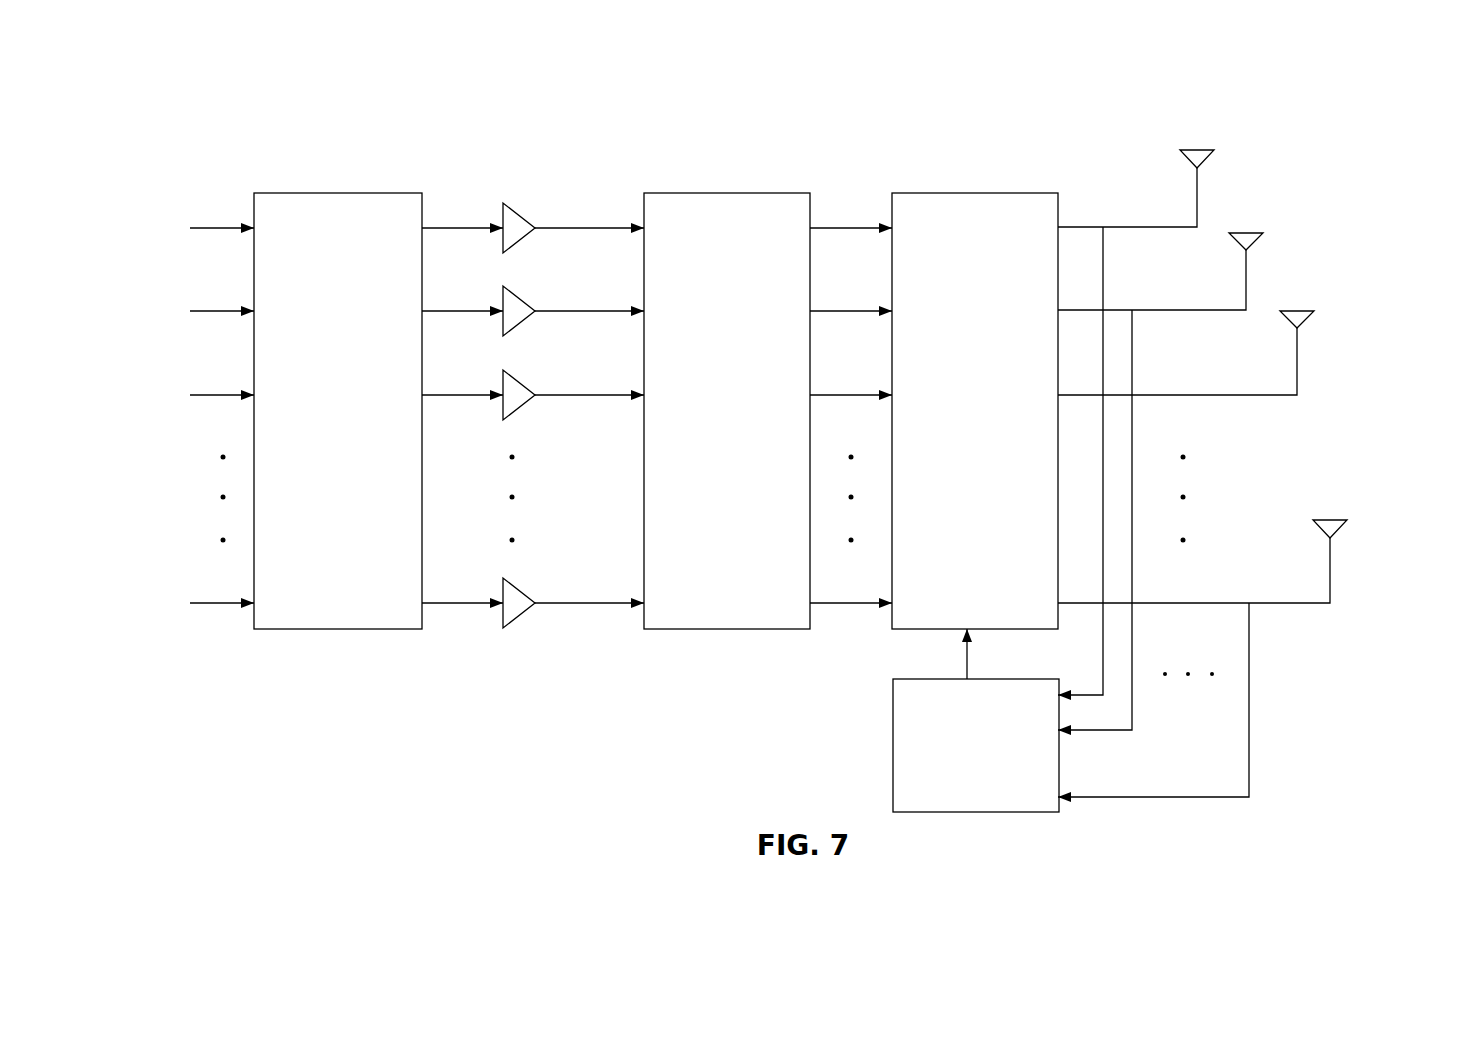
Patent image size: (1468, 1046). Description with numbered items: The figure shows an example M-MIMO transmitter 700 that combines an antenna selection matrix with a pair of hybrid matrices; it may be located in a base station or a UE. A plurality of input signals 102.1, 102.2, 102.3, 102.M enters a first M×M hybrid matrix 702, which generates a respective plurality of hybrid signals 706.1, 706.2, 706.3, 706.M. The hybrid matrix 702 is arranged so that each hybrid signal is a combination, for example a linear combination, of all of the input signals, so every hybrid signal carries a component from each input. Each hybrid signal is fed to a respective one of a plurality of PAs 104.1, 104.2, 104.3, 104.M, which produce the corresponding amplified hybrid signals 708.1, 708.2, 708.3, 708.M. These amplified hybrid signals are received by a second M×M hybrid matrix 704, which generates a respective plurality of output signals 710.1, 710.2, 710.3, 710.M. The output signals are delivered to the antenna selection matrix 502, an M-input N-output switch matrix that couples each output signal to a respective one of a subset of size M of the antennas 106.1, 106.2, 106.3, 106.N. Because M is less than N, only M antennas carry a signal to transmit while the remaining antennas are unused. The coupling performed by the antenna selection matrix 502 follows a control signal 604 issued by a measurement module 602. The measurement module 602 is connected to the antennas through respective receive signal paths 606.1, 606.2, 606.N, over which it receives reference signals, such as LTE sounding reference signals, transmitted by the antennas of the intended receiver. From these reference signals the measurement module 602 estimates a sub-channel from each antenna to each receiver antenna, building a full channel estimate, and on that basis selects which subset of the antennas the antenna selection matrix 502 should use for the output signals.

The M-MIMO transmitter 700 is at (1437, 61).
The input signal 102.1 is at (209, 220).
The input signal 102.2 is at (209, 303).
The input signal 102.3 is at (209, 387).
The input signal 102.M is at (220, 606).
The hybrid matrix 702 is at (338, 411).
The hybrid matrix 704 is at (727, 411).
The hybrid signal 706.1 is at (460, 220).
The hybrid signal 706.2 is at (460, 303).
The hybrid signal 706.3 is at (460, 387).
The hybrid signal 706.M is at (457, 606).
The PA 104.1 is at (520, 202).
The PA 104.2 is at (529, 290).
The PA 104.3 is at (526, 376).
The PA 104.M is at (519, 591).
The amplified hybrid signal 708.1 is at (610, 220).
The amplified hybrid signal 708.2 is at (610, 303).
The amplified hybrid signal 708.3 is at (610, 387).
The amplified hybrid signal 708.M is at (604, 606).
The output signal 710.1 is at (849, 219).
The output signal 710.2 is at (849, 302).
The output signal 710.3 is at (849, 386).
The output signal 710.M is at (846, 606).
The antenna selection matrix 502 is at (975, 411).
The measurement module 602 is at (976, 745).
The control signal 604 is at (967, 666).
The antenna 106.1 is at (1199, 148).
The antenna 106.2 is at (1247, 233).
The antenna 106.3 is at (1296, 311).
The antenna 106.N is at (1331, 519).
The receive signal path 606.1 is at (1103, 248).
The receive signal path 606.2 is at (1132, 349).
The receive signal path 606.N is at (1249, 688).